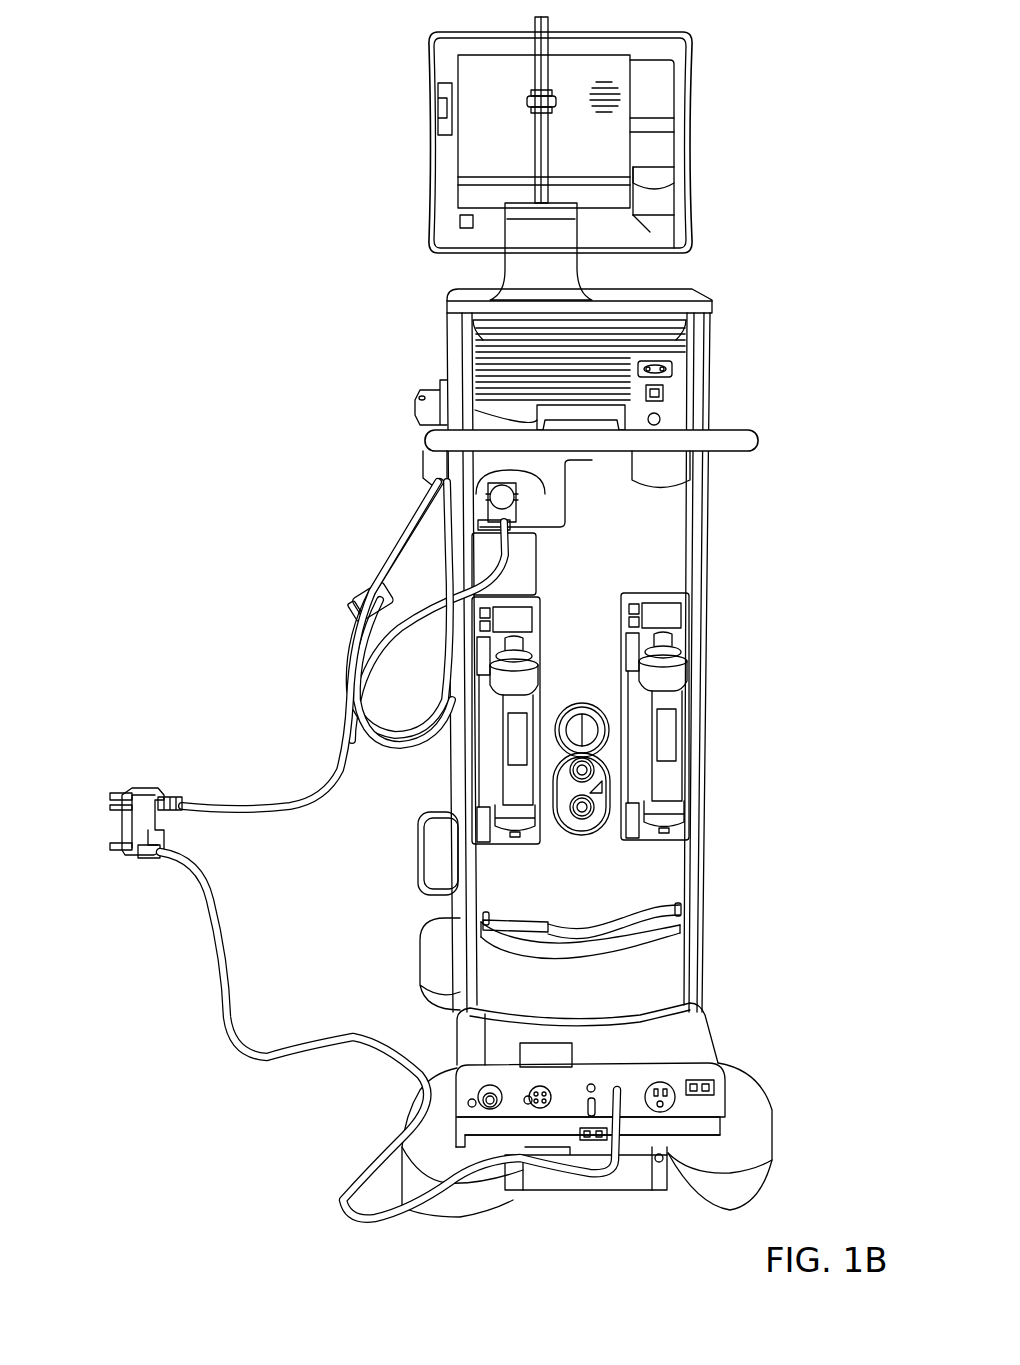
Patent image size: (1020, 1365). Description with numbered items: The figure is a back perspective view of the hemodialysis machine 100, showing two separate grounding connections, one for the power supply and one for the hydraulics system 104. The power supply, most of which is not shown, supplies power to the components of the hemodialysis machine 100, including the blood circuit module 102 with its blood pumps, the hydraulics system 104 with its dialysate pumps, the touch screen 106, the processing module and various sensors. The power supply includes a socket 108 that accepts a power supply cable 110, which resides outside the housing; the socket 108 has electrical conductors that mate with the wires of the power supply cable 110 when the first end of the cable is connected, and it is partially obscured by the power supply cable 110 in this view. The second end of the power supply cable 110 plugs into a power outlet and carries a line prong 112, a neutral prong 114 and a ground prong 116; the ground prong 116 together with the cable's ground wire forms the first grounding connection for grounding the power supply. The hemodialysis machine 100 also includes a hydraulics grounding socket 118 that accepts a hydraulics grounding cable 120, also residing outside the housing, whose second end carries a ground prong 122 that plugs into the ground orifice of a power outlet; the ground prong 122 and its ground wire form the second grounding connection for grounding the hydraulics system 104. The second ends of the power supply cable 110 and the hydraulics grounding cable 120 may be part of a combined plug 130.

The hemodialysis machine 100 is at (170, 96).
The blood circuit module 102 is at (778, 323).
The hydraulics system 104 is at (785, 770).
The touch screen 106 is at (736, 72).
The socket 108 is at (485, 492).
The power supply cable 110 is at (492, 552).
The line prong 112 is at (122, 790).
The neutral prong 114 is at (114, 795).
The ground prong 116 is at (114, 808).
The hydraulics grounding socket 118 is at (618, 1088).
The hydraulics grounding cable 120 is at (220, 998).
The ground prong 122 is at (118, 848).
The combined plug 130 is at (175, 768).